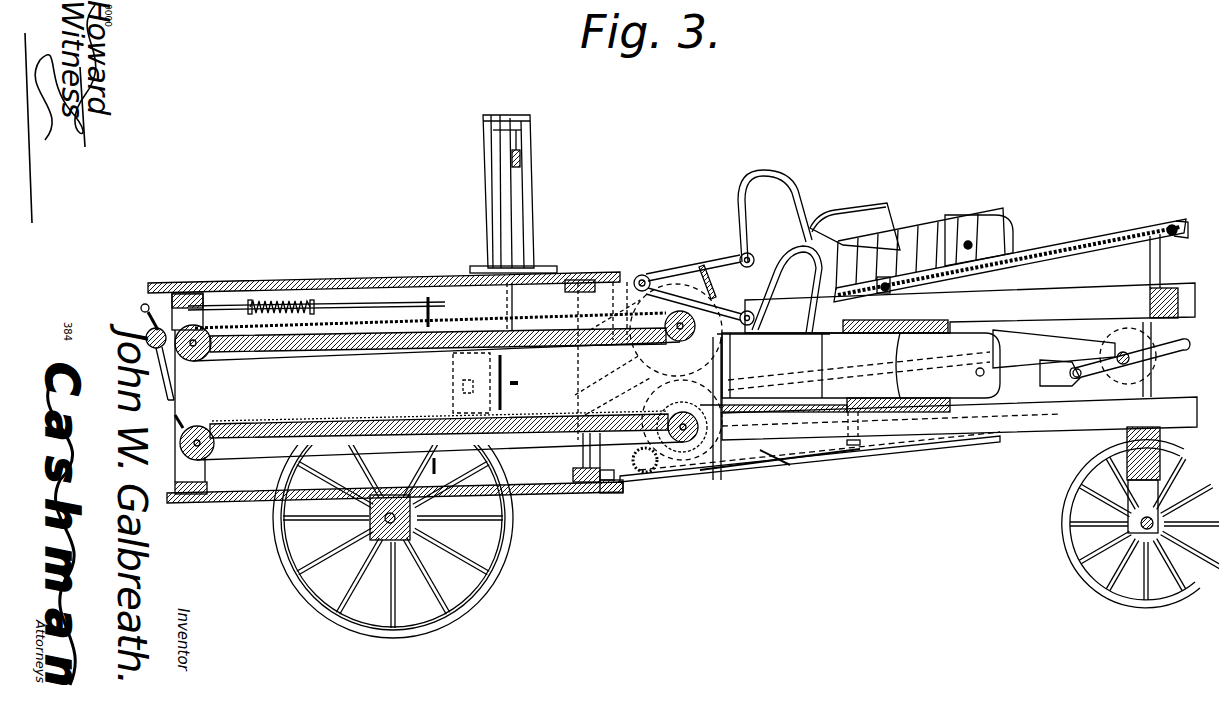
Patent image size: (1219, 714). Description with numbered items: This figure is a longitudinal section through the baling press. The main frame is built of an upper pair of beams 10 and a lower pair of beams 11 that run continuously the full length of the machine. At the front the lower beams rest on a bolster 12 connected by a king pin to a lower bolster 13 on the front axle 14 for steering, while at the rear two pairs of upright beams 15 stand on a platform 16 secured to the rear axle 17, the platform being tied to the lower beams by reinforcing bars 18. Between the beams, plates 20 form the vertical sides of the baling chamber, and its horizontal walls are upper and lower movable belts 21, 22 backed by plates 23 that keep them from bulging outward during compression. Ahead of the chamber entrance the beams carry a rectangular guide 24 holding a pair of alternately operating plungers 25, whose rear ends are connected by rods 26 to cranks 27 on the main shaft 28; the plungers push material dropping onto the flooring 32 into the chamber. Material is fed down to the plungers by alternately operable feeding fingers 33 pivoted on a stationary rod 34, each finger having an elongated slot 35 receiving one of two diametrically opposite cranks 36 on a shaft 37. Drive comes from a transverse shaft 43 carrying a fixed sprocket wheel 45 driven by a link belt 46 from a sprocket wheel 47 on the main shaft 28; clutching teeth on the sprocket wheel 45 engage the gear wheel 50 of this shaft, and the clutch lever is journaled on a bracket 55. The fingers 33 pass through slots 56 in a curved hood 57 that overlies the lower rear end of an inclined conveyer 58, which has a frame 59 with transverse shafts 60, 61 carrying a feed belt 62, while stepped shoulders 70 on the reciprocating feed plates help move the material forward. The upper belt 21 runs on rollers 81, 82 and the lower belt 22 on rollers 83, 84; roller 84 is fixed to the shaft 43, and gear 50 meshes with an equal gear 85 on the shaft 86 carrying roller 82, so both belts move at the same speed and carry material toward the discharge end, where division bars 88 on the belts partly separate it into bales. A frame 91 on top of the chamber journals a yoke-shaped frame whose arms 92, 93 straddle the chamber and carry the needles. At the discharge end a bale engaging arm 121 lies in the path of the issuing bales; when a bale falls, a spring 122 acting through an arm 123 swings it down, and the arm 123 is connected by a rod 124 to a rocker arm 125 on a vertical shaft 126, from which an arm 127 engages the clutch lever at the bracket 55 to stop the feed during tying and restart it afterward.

The upper pair of beams 10 is at (1153, 287).
The lower pair of beams 11 is at (1163, 403).
The bolster 12 is at (1127, 438).
The lower bolster 13 is at (1140, 497).
The front axle 14 is at (1127, 523).
The upright beams 15 is at (195, 484).
The platform 16 is at (568, 484).
The rear axle 17 is at (310, 540).
The reinforcing bars 18 is at (793, 457).
The plates 20 is at (438, 401).
The upper movable belt 21 is at (408, 320).
The lower movable belt 22 is at (401, 440).
The backing plates 23 is at (355, 356).
The rectangular guide 24 is at (923, 413).
The plungers 25 is at (848, 352).
The rods 26 is at (1043, 357).
The cranks 27 is at (1167, 347).
The main shaft 28 is at (1130, 385).
The flooring 32 is at (859, 378).
The feeding fingers 33 is at (797, 187).
The stationary rod or spindle 34 is at (612, 300).
The elongated slot 35 is at (737, 258).
The cranks 36 is at (703, 267).
The shaft 37 is at (704, 299).
The shaft 43 is at (717, 453).
The sprocket wheel 45 is at (630, 487).
The link belt 46 is at (770, 447).
The sprocket wheel 47 is at (1110, 383).
The gear wheel 50 is at (647, 477).
The bracket 55 is at (590, 477).
The slots 56 is at (818, 216).
The curved hood 57 is at (863, 205).
The inclined conveyer 58 is at (1038, 243).
The conveyer frame 59 is at (1150, 220).
The lower transverse shaft 60 is at (887, 280).
The upper transverse shaft 61 is at (1173, 233).
The feed belt 62 is at (1162, 245).
The stepped shoulders 70 is at (963, 243).
The roller 81 is at (207, 327).
The roller 82 is at (647, 282).
The roller 83 is at (184, 428).
The roller 84 is at (683, 407).
The gear 85 is at (588, 408).
The shaft 86 is at (670, 345).
The division strips or bars 88 is at (503, 410).
The frame 91 is at (490, 203).
The arm 92 is at (503, 183).
The arm 93 is at (522, 149).
The arm 121 is at (172, 362).
The spring 122 is at (297, 307).
The arm 123 is at (143, 306).
The rod 124 is at (233, 309).
The rocker arm 125 is at (574, 350).
The vertical shaft 126 is at (594, 428).
The arm 127 is at (572, 497).